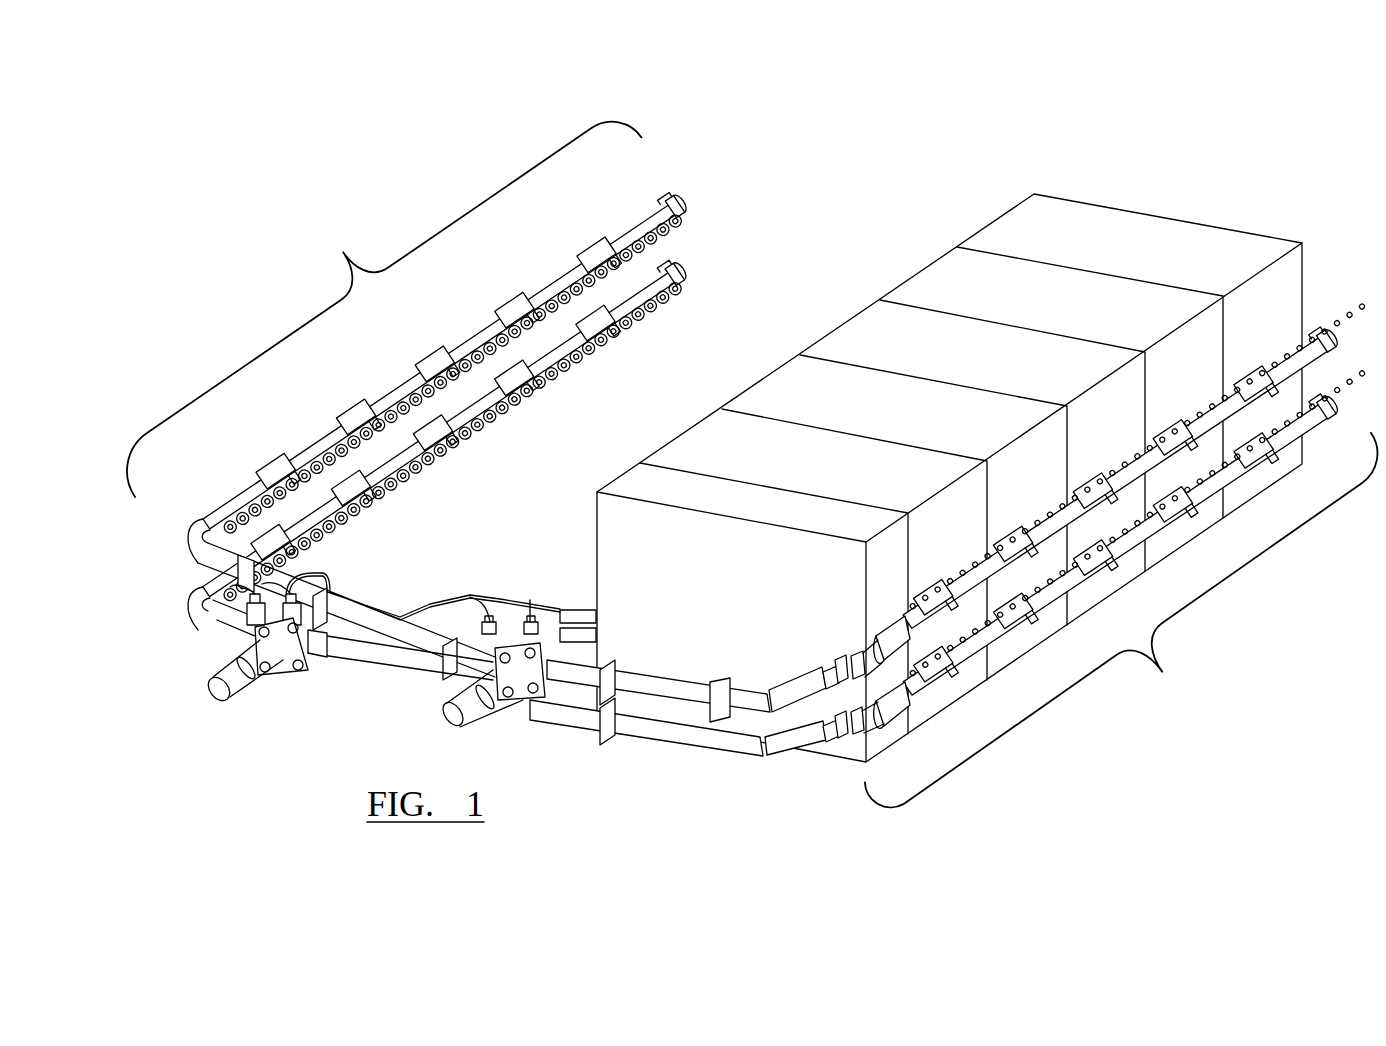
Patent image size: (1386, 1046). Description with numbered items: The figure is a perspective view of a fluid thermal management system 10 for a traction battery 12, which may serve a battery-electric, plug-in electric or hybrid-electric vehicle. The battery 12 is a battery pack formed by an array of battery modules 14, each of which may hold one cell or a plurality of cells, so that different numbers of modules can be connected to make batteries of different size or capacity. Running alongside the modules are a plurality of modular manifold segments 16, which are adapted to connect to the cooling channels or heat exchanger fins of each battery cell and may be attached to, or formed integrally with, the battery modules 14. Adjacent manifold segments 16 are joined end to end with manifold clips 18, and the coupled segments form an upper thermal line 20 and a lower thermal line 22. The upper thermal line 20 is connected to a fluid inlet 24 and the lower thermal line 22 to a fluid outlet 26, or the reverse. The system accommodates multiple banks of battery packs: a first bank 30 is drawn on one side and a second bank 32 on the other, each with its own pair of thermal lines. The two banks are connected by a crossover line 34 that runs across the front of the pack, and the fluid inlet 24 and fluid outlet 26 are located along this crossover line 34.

The fluid thermal management system 10 is at (1229, 163).
The traction battery 12 is at (916, 429).
The battery module 14 is at (637, 485).
The modular manifold segment 16 is at (243, 500).
The manifold clip 18 is at (269, 470).
The upper thermal line 20 is at (657, 210).
The lower thermal line 22 is at (657, 273).
The fluid inlet 24 is at (490, 712).
The fluid outlet 26 is at (252, 678).
The first bank 30 is at (1123, 640).
The second bank 32 is at (368, 286).
The crossover line 34 is at (657, 737).